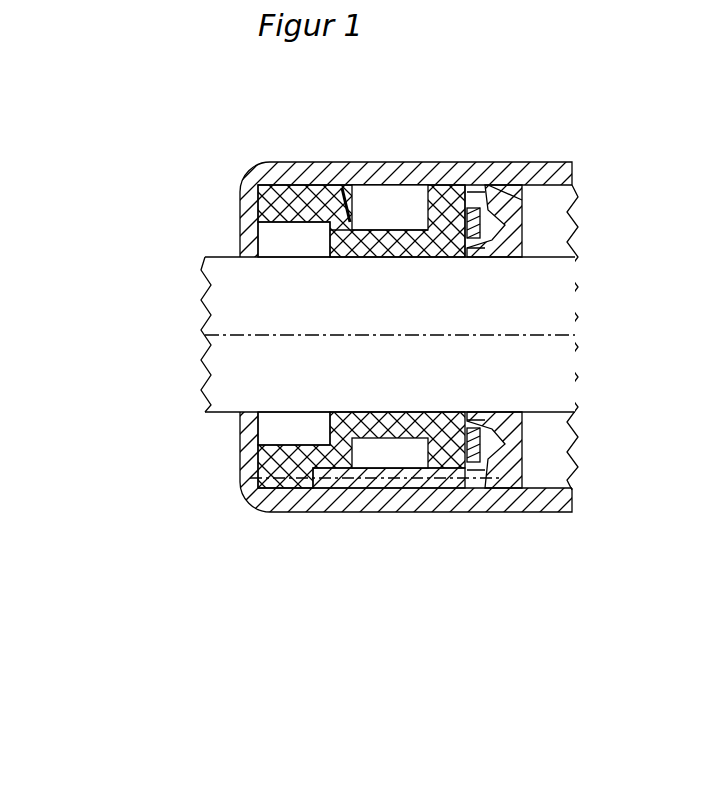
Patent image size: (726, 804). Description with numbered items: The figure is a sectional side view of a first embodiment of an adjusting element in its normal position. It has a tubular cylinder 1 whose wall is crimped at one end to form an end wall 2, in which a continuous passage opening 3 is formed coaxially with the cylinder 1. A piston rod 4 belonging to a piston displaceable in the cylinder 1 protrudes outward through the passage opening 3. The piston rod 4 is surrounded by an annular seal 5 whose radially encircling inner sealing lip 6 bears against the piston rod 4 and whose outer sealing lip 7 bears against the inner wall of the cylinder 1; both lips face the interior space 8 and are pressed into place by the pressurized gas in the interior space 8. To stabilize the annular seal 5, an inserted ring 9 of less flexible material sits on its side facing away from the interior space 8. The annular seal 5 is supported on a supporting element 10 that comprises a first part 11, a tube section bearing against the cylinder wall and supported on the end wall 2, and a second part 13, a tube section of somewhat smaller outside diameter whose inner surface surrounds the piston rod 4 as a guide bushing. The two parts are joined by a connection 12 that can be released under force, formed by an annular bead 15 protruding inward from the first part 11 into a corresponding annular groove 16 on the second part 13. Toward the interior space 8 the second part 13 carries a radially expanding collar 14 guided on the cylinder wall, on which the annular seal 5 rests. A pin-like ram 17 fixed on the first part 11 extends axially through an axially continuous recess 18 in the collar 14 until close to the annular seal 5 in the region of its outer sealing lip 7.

The tubular cylinder 1 is at (290, 507).
The end wall 2 is at (247, 458).
The passage opening 3 is at (247, 425).
The piston rod 4 is at (223, 373).
The annular seal 5 is at (487, 504).
The inner sealing lip 6 is at (513, 247).
The outer sealing lip 7 is at (490, 230).
The interior space 8 is at (560, 512).
The inserted ring 9 is at (472, 238).
The supporting element 10 is at (333, 168).
The first part 11 is at (268, 198).
The connection 12 is at (361, 185).
The second part 13 is at (393, 225).
The collar 14 is at (363, 409).
The annular bead 15 is at (345, 222).
The annular groove 16 is at (330, 225).
The ram 17 is at (375, 482).
The recess 18 is at (472, 482).